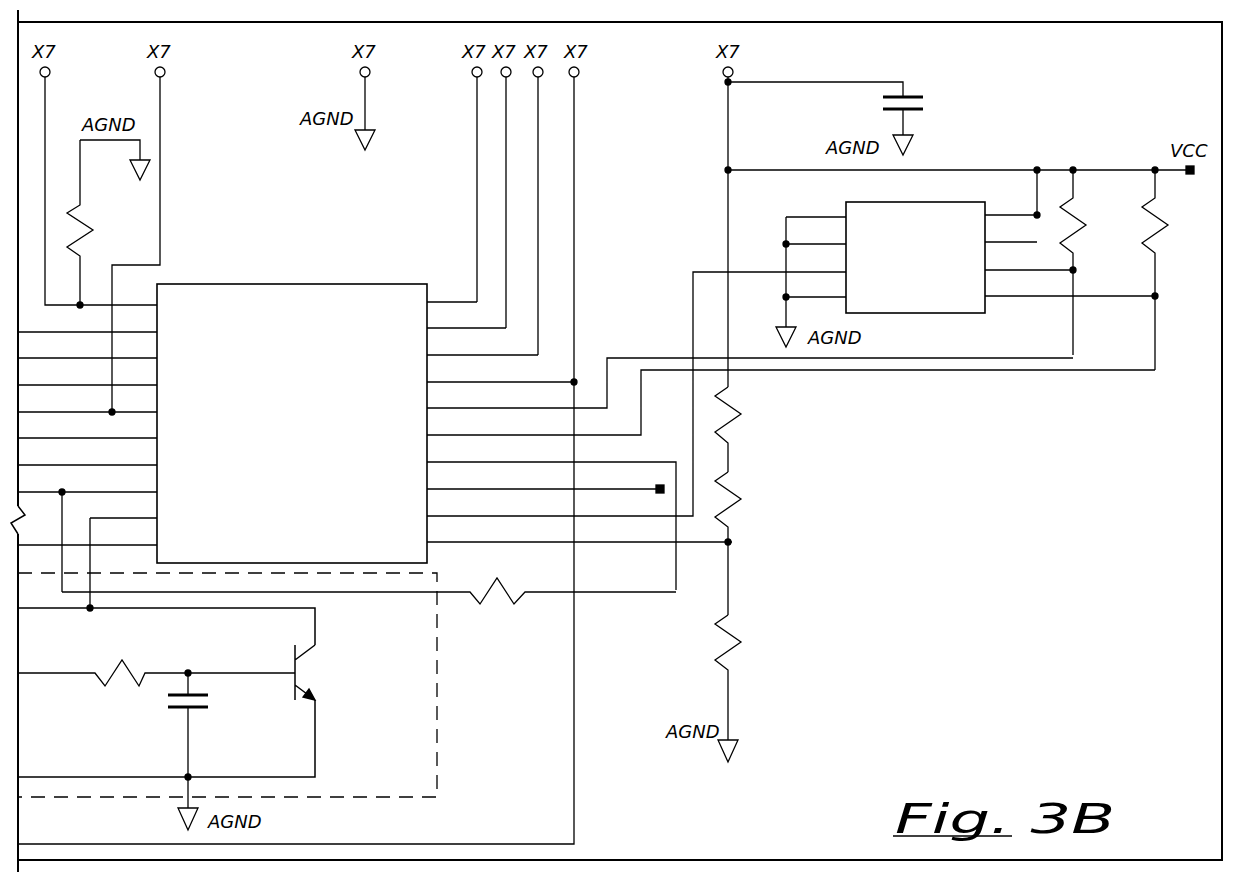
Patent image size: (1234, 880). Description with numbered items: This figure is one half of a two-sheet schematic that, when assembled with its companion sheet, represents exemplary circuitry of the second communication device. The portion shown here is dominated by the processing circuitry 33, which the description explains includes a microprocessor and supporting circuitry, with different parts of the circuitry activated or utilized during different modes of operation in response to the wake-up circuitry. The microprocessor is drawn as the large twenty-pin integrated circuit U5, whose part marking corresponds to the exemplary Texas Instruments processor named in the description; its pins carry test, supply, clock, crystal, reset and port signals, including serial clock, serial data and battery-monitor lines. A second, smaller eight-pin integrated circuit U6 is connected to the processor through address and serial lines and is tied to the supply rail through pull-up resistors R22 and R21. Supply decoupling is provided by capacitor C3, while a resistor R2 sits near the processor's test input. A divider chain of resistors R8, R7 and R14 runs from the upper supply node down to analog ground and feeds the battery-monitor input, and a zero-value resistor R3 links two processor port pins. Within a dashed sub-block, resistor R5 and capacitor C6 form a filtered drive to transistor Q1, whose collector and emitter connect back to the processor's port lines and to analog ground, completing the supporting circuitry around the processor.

The processing circuitry 33 is at (586, 386).
The microcontroller MSP430F1121 U5 is at (404, 257).
The EEPROM U6 is at (914, 245).
The resistor 10K R2 is at (95, 222).
The resistor 0 ohm R3 is at (369, 597).
The resistor 10K R5 is at (156, 667).
The resistor 1M R7 is at (747, 543).
The resistor 2M R8 is at (747, 429).
The resistor 1M R14 is at (704, 677).
The resistor 10K R21 is at (1173, 270).
The resistor 10K R22 is at (1090, 262).
The capacitor 0.1UF C3 is at (858, 108).
The capacitor 0.1UF C6 is at (159, 740).
The transistor MMBT3904 Q1 is at (339, 678).